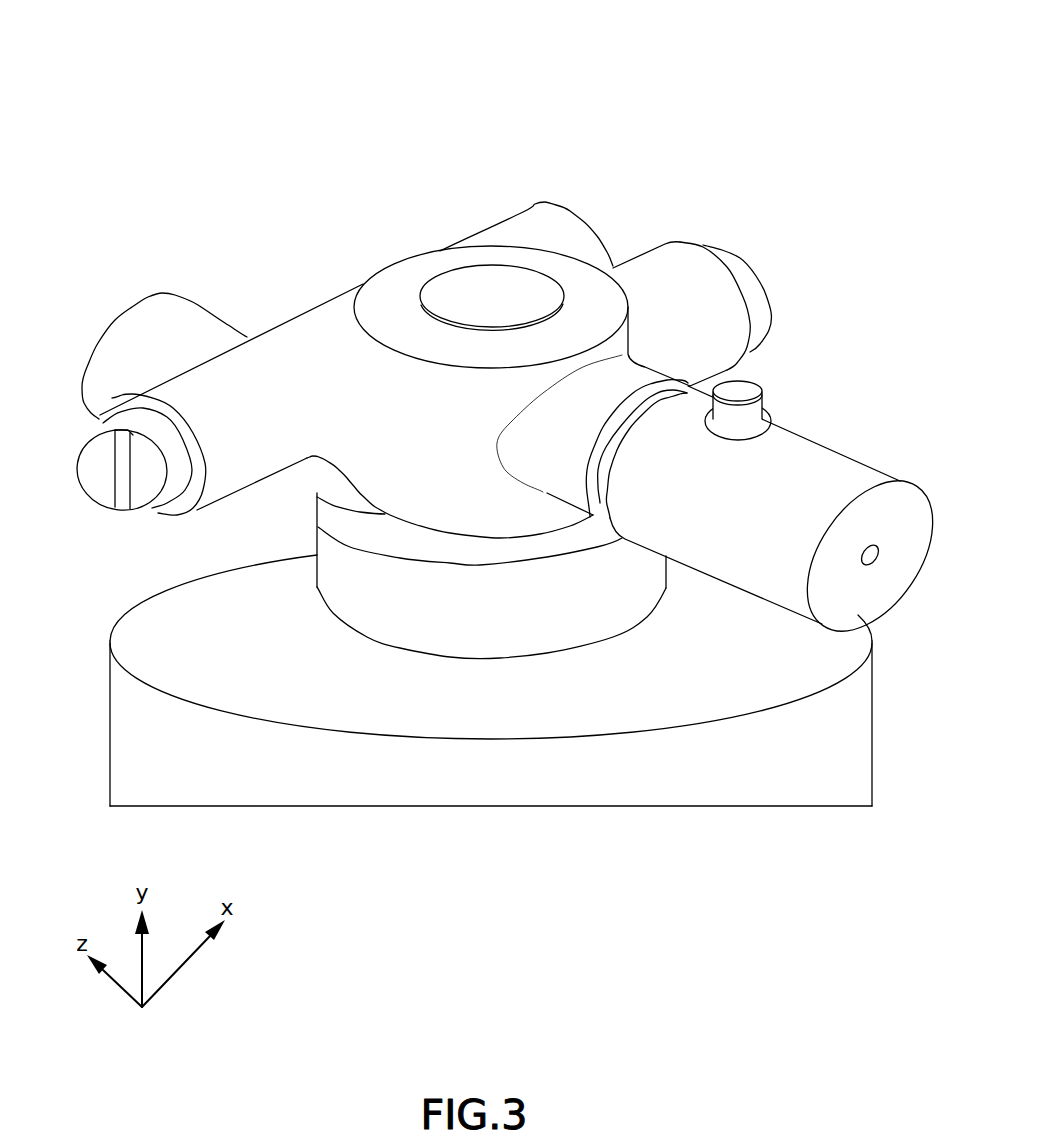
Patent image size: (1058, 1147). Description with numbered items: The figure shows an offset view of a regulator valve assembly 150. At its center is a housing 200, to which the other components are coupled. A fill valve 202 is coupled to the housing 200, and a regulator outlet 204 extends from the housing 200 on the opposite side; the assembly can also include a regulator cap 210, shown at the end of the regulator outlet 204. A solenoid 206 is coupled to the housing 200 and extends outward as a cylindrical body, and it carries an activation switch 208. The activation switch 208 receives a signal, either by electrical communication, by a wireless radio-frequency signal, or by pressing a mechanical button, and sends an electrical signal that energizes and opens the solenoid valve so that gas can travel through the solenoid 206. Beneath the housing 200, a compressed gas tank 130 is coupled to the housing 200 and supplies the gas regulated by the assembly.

The regulator valve assembly 150 is at (736, 124).
The compressed gas tank 130 is at (714, 805).
The housing 200 is at (515, 228).
The fill valve 202 is at (741, 270).
The regulator outlet 204 is at (133, 312).
The solenoid 206 is at (849, 462).
The activation switch 208 is at (752, 390).
The regulator cap 210 is at (108, 485).